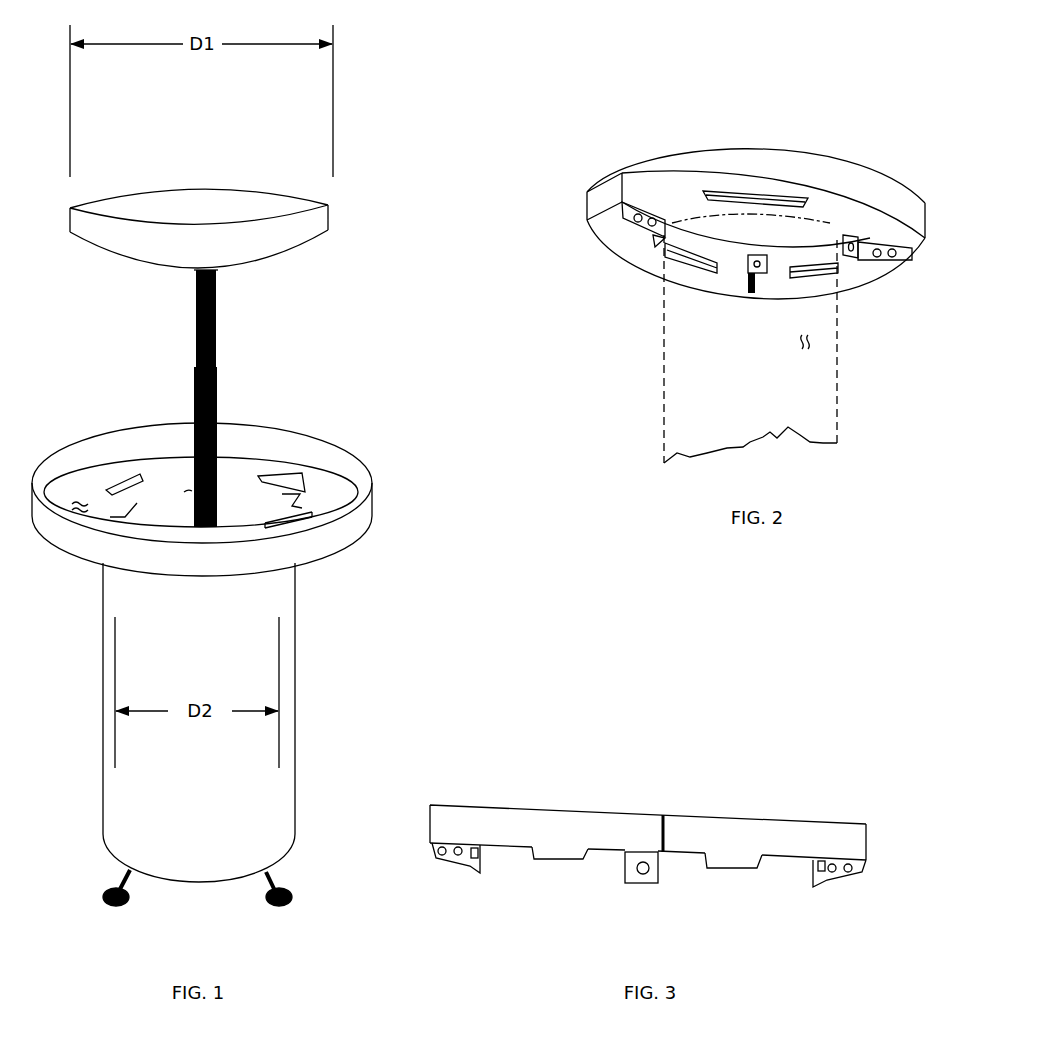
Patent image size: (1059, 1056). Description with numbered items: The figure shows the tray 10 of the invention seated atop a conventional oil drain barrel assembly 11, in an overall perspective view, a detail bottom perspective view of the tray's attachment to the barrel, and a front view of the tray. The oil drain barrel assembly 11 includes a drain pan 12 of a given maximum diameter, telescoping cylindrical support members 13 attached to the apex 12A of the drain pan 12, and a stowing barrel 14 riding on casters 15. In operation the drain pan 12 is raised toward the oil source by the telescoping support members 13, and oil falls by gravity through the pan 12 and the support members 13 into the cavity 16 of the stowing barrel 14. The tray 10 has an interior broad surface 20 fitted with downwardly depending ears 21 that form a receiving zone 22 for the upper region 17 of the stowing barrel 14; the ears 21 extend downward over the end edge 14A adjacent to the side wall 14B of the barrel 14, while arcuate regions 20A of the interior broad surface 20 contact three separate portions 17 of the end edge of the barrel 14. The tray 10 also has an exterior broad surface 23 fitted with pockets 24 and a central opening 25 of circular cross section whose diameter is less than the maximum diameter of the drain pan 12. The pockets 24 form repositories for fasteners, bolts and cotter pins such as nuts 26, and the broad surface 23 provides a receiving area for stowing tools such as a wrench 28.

In FIG. 1, the tray 10 is at (356, 454).
In FIG. 2, the tray 10 is at (794, 111).
In FIG. 3, the tray 10 is at (759, 771).
In FIG. 1, the oil drain barrel assembly 11 is at (381, 194).
In FIG. 1, the drain pan 12 is at (306, 249).
In FIG. 1, the apex 12A is at (190, 283).
In FIG. 1, the telescoping cylindrical support members 13 is at (221, 391).
In FIG. 1, the stowing barrel 14 is at (100, 663).
In FIG. 2, the stowing barrel 14 is at (661, 424).
In FIG. 2, the end edge 14A is at (688, 208).
In FIG. 2, the side wall 14B is at (815, 341).
In FIG. 1, the casters 15 is at (137, 906).
In FIG. 1, the cavity 16 is at (234, 512).
In FIG. 2, the upper region 17 is at (688, 270).
In FIG. 2, the interior broad surface 20 is at (641, 252).
In FIG. 2, the arcuate regions 20A is at (782, 215).
In FIG. 2, the ears 21 is at (649, 236).
In FIG. 3, the ears 21 is at (487, 860).
In FIG. 2, the receiving zone 22 is at (833, 218).
In FIG. 1, the exterior broad surface 23 is at (81, 498).
In FIG. 1, the pockets 24 is at (299, 479).
In FIG. 3, the pockets 24 is at (584, 868).
In FIG. 1, the central opening 25 is at (187, 490).
In FIG. 1, the nuts 26 is at (274, 476).
In FIG. 1, the wrench 28 is at (291, 533).